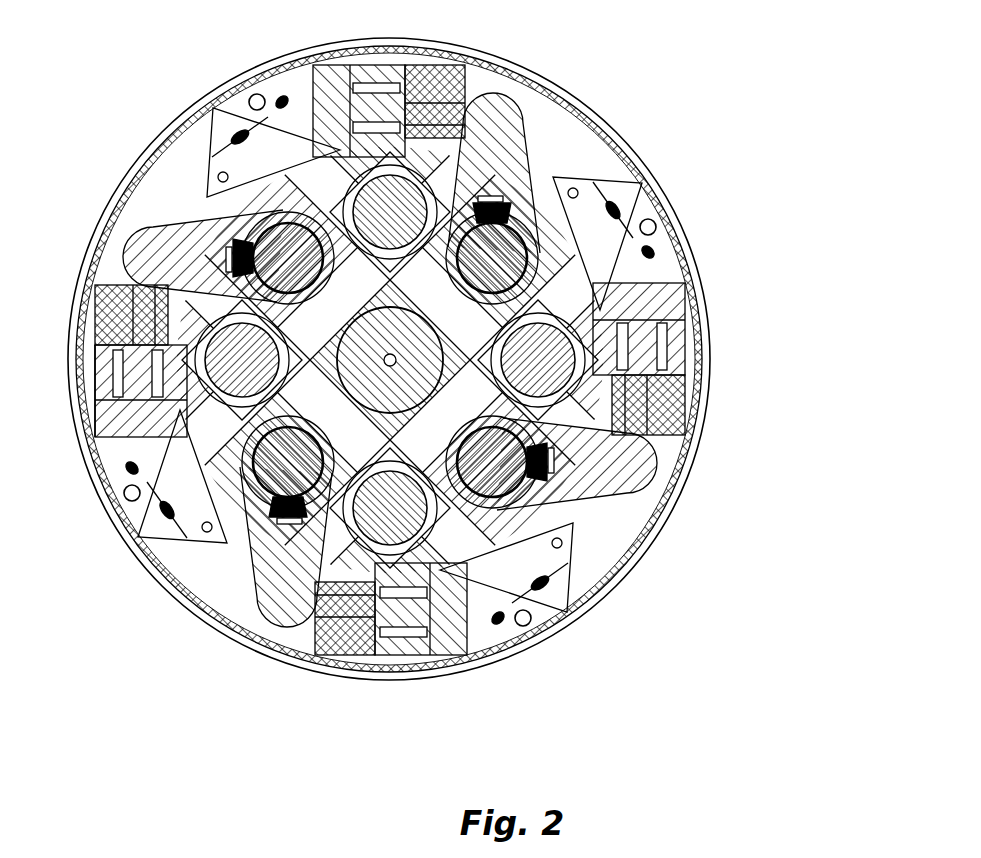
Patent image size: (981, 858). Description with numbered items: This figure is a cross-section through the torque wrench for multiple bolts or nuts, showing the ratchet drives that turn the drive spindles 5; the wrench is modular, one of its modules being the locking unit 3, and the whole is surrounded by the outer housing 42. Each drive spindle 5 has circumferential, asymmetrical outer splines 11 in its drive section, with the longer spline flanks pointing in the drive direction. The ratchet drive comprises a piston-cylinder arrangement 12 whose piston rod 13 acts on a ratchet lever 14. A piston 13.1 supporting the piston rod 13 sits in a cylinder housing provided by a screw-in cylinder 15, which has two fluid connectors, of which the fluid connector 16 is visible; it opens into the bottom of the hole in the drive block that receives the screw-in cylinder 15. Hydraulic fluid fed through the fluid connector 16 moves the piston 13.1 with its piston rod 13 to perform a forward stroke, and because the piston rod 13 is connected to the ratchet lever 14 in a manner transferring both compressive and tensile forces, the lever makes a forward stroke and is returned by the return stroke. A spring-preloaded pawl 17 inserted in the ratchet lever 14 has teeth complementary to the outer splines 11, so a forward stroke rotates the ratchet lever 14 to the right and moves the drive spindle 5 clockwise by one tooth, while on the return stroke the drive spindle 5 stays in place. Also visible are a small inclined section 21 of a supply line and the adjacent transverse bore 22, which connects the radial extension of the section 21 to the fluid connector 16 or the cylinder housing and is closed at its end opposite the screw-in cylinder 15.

The locking unit 3 is at (552, 52).
The drive spindle 5 is at (280, 270).
The outer splines 11 is at (262, 212).
The piston-cylinder arrangement 12 is at (120, 273).
The piston rod 13 is at (110, 355).
The piston 13.1 is at (150, 427).
The ratchet lever 14 is at (178, 267).
The screw-in cylinder 15 is at (97, 373).
The fluid connector 16 is at (126, 480).
The pawl 17 is at (266, 221).
The section of a fluid line 21 is at (133, 470).
The transverse bore 22 is at (167, 513).
The housing 42 is at (279, 661).